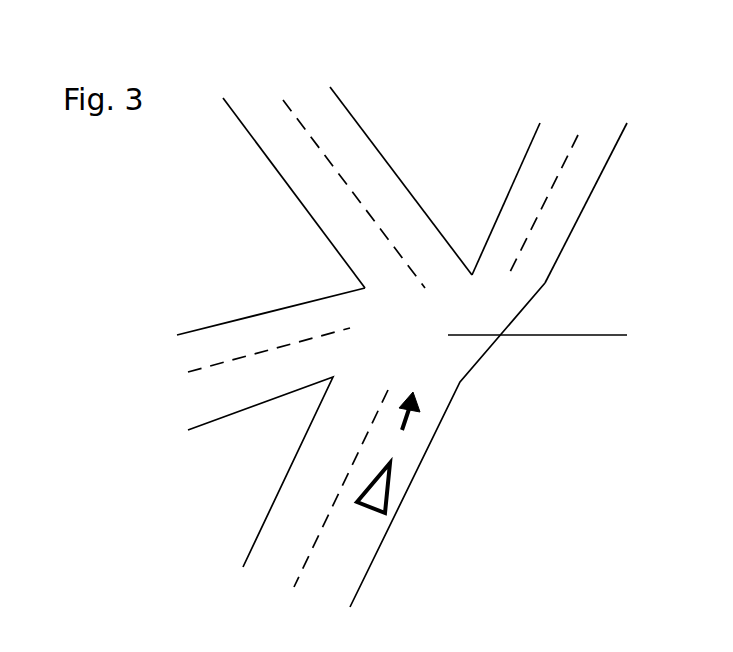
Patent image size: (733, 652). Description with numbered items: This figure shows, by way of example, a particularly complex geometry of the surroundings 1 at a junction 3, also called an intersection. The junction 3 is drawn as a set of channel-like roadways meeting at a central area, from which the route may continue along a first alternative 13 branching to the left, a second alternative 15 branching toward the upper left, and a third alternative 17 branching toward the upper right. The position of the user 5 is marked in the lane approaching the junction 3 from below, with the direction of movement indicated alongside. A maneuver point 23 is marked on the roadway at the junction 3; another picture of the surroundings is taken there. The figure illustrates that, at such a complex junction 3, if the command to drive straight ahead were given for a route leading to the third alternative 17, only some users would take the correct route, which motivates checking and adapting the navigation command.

The geometry of the surroundings 1 is at (135, 234).
The junction 3 is at (515, 396).
The position of the user 5 is at (387, 492).
The first alternative 13 is at (151, 392).
The second alternative 15 is at (304, 92).
The third alternative 17 is at (614, 122).
The maneuver point 23 is at (558, 334).